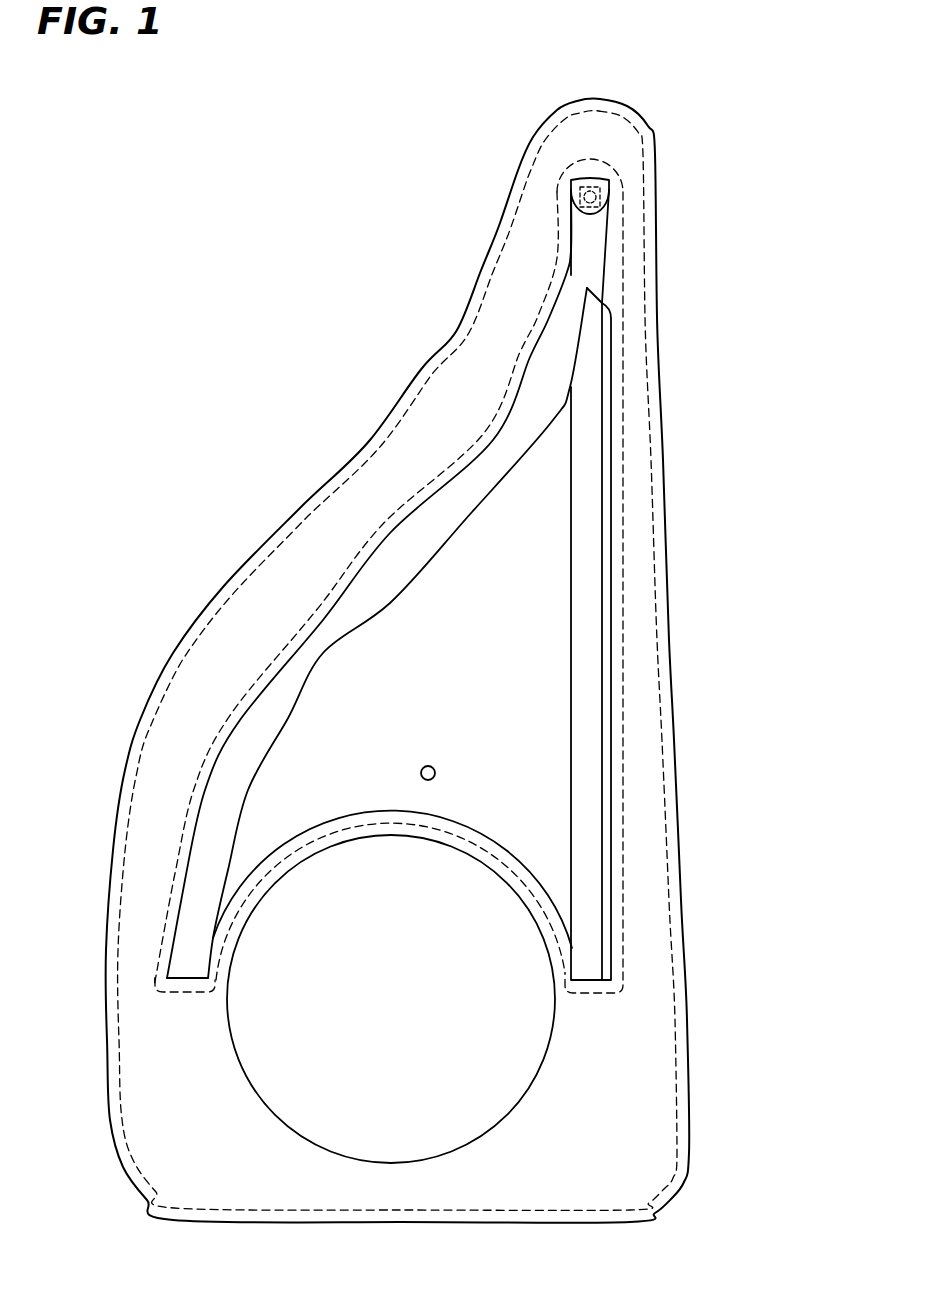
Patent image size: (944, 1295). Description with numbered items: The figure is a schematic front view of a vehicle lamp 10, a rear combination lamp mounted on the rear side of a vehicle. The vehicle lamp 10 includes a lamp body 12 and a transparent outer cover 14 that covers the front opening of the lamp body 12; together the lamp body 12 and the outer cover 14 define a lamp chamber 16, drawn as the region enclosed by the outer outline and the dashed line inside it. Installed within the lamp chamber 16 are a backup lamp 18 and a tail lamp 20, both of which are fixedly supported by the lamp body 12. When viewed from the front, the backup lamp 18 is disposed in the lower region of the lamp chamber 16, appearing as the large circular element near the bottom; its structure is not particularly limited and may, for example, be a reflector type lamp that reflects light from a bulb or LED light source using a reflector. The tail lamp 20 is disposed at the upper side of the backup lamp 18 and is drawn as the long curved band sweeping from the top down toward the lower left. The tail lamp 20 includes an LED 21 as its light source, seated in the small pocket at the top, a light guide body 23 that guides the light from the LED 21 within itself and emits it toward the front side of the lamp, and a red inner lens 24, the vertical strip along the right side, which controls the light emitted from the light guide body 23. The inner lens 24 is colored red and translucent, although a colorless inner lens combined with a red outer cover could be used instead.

The vehicle lamp 10 is at (263, 295).
The lamp body 12 is at (223, 583).
The outer cover 14 is at (303, 520).
The lamp chamber 16 is at (333, 560).
The backup lamp 18 is at (546, 1062).
The tail lamp 20 is at (505, 396).
The LED 21 is at (600, 192).
The light guide body 23 is at (613, 275).
The inner lens 24 is at (623, 692).